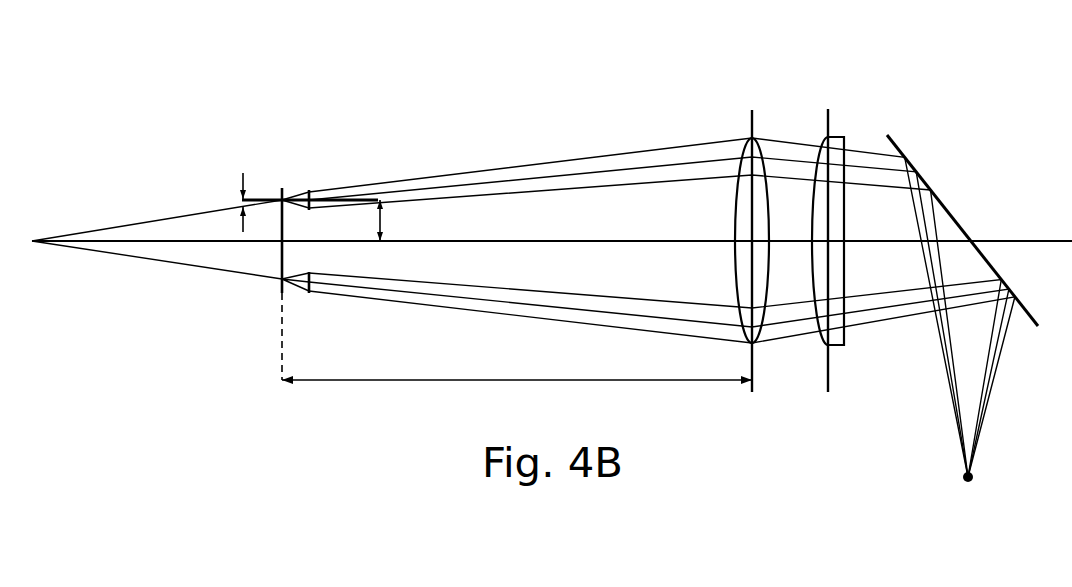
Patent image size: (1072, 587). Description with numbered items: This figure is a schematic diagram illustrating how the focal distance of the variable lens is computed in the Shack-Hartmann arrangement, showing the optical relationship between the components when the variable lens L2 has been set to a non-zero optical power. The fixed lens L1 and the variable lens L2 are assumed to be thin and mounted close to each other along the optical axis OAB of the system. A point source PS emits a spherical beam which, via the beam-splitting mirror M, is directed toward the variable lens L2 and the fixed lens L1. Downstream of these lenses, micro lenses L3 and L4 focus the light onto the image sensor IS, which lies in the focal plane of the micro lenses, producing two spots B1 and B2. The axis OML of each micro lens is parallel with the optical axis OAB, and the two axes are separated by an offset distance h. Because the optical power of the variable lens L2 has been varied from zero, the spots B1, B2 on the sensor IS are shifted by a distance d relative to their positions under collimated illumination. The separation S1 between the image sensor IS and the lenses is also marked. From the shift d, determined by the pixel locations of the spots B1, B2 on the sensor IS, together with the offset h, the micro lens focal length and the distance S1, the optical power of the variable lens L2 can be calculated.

The optical axis OAB is at (1023, 241).
The spot B1 is at (273, 193).
The spot B2 is at (282, 281).
The image sensor IS is at (280, 224).
The axis of micro lens OML is at (257, 197).
The third lens L3 is at (308, 190).
The fourth lens L4 is at (308, 295).
The distance d is at (243, 173).
The offset distance h is at (382, 218).
The distance between image surface and first lens S1 is at (407, 381).
The fixed lens L1 is at (753, 138).
The variable lens L2 is at (832, 137).
The beam-splitting mirror M is at (913, 163).
The point source PS is at (963, 484).